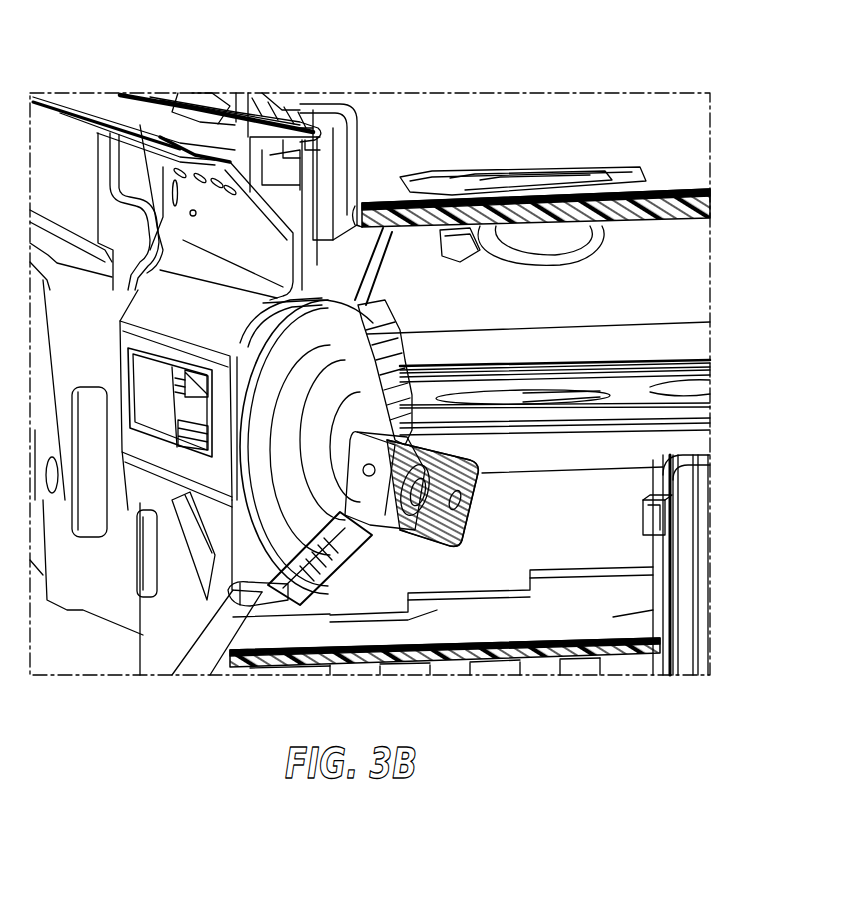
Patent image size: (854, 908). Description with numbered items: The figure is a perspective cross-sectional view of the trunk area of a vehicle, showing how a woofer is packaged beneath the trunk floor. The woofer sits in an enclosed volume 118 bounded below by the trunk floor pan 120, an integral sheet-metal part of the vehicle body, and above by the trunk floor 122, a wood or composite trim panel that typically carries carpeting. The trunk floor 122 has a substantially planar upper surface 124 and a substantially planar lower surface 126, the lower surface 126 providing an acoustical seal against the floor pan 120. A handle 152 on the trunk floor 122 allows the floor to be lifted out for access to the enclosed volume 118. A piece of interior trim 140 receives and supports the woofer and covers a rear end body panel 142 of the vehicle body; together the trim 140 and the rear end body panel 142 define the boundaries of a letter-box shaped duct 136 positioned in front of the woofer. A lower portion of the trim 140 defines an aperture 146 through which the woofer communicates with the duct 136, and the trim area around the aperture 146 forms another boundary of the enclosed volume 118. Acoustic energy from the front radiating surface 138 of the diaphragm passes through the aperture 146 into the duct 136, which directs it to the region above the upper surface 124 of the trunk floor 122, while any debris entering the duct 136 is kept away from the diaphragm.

The enclosed volume 118 is at (588, 505).
The trunk floor pan 120 is at (708, 340).
The trunk floor 122 is at (698, 212).
The upper surface 124 is at (683, 128).
The lower surface 126 is at (668, 226).
The duct 136 is at (332, 212).
The front radiating surface 138 is at (290, 480).
The interior trim 140 is at (240, 110).
The rear end body panel 142 is at (148, 643).
The aperture 146 is at (238, 313).
The handle 152 is at (512, 180).